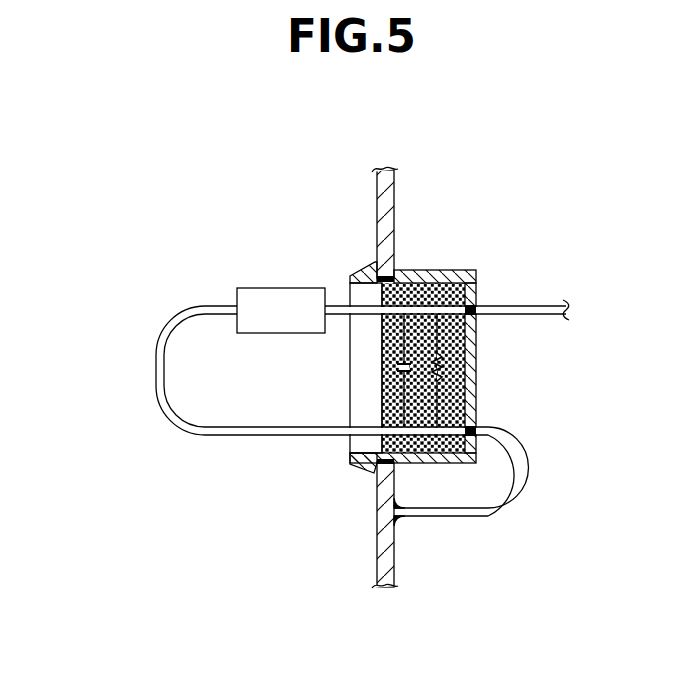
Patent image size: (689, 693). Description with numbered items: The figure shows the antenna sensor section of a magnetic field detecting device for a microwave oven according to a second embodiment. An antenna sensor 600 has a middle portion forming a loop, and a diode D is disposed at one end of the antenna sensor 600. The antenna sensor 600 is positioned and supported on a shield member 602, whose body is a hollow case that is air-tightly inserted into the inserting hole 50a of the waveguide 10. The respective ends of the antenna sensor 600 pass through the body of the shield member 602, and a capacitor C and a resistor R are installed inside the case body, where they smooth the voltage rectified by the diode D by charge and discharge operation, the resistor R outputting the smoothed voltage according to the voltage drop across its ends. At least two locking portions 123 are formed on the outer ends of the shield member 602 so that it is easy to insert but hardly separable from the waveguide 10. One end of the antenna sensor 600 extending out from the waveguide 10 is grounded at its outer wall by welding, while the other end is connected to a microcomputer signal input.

The waveguide 10 is at (381, 193).
The locking portions 123 is at (364, 273).
The antenna sensor 600 is at (158, 351).
The shield member 602 is at (466, 366).
The inserting hole 50a is at (392, 462).
The diode D is at (250, 293).
The capacitor C is at (417, 351).
The resistor R is at (449, 351).